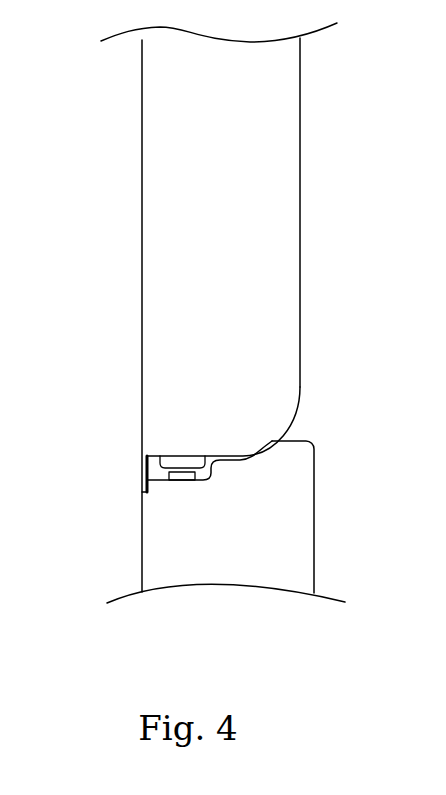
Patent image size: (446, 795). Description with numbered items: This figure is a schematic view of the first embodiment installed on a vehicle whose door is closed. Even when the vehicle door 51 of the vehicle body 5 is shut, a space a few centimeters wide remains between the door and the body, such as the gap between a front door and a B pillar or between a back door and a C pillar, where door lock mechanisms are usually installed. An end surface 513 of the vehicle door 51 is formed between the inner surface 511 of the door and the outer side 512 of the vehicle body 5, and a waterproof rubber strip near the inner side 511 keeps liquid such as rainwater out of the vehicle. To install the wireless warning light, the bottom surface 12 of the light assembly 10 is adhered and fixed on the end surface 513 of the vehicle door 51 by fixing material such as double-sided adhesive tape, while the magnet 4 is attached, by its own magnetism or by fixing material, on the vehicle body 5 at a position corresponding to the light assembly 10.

The magnet 4 is at (183, 476).
The vehicle body 5 is at (216, 472).
The light assembly 10 is at (182, 462).
The bottom surface 12 is at (201, 455).
The vehicle door 51 is at (225, 307).
The inner surface of the vehicle door 511 is at (300, 253).
The outer side of the vehicle body 512 is at (141, 133).
The end surface of the vehicle door 513 is at (147, 457).